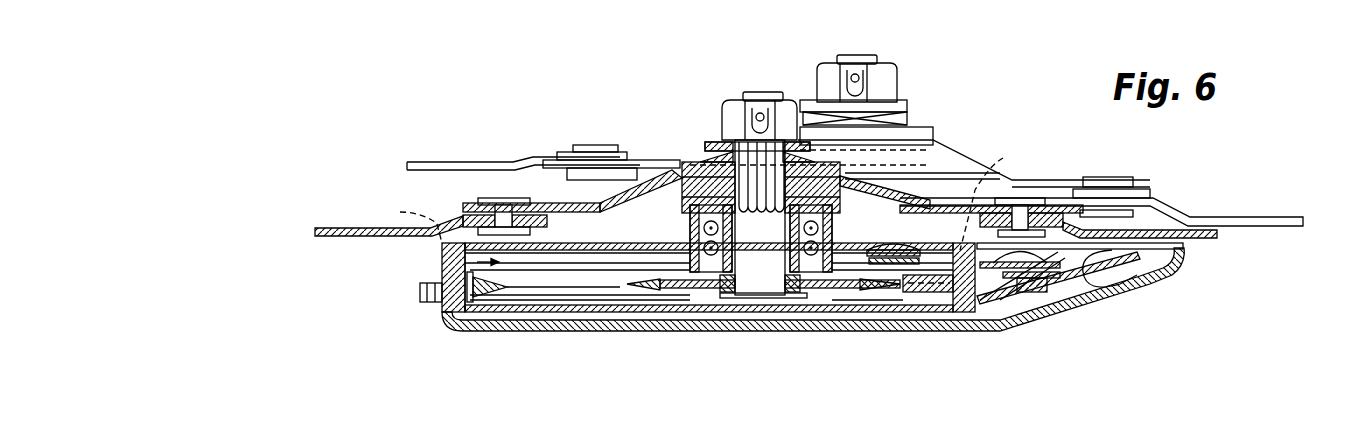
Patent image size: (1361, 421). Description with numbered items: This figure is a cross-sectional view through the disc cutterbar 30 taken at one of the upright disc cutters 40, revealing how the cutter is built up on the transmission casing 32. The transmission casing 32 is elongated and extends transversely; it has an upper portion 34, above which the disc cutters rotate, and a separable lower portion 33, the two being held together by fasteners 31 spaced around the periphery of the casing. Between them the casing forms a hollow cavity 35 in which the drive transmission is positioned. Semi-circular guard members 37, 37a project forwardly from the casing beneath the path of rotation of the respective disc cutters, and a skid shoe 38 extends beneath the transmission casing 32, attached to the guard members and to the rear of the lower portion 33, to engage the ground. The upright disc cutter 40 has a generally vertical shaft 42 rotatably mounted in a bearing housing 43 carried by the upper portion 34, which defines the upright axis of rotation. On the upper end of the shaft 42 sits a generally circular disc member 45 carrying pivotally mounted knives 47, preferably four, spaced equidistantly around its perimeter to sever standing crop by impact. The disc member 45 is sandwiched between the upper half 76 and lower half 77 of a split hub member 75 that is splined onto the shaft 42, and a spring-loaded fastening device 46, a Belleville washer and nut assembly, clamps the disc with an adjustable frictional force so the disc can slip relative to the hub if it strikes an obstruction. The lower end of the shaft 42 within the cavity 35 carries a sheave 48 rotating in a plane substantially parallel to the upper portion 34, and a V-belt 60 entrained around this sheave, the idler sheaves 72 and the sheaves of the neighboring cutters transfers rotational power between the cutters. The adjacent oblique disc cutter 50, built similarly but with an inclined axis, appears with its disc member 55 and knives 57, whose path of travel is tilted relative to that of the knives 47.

The disc cutterbar 30 is at (1180, 170).
The fasteners 31 is at (706, 195).
The transmission casing 32 is at (440, 268).
The lower portion 33 is at (905, 312).
The upper portion 34 is at (605, 243).
The hollow cavity 35 is at (440, 255).
The guard member 37 is at (1107, 262).
The guard member 37a is at (1165, 260).
The skid shoe 38 is at (480, 331).
The upright disc cutter 40 is at (440, 205).
The shaft 42 is at (767, 92).
The bearing housing 43 is at (690, 240).
The disc member 45 is at (550, 203).
The spring-loaded fastening device 46 is at (730, 112).
The knives 47 is at (322, 226).
The sheave 48 is at (693, 290).
The oblique disc cutter 50 is at (945, 130).
The disc member 55 is at (662, 158).
The knives 57 is at (427, 162).
The V-belt 60 is at (440, 307).
The idler sheaves 72 is at (520, 292).
The split hub member 75 is at (688, 127).
The upper half 76 is at (660, 163).
The lower half 77 is at (647, 170).